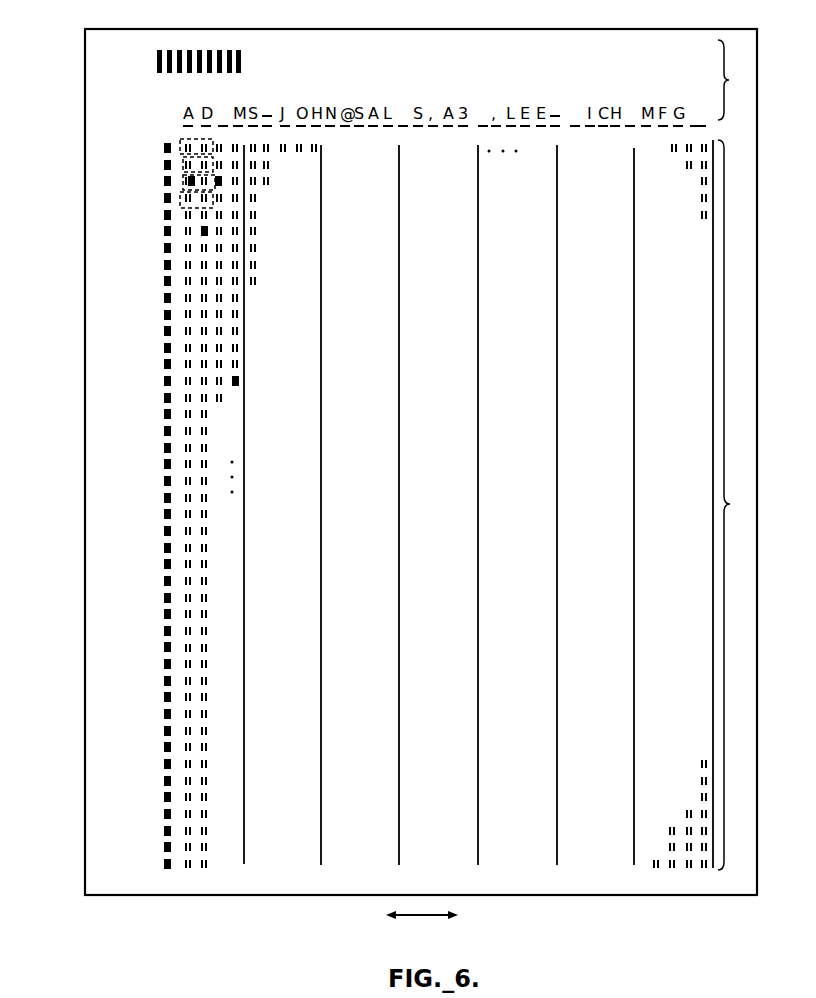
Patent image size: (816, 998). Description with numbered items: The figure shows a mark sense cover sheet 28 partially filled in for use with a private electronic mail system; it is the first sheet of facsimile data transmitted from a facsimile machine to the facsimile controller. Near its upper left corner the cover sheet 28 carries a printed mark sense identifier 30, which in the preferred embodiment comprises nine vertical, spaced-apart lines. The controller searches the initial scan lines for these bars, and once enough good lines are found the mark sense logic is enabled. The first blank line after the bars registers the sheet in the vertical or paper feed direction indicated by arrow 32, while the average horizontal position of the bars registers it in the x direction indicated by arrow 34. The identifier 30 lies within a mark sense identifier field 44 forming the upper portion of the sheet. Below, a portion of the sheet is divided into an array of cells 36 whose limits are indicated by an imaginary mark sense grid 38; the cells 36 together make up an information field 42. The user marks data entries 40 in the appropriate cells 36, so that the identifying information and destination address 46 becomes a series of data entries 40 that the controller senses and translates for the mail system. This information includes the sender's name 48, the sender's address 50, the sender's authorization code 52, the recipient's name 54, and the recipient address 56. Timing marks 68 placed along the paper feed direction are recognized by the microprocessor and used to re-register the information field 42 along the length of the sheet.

The mark sense cover sheet 28 is at (609, 30).
The mark sense identifier 30 is at (226, 50).
The arrow indicating vertical or y direction 32 is at (72, 384).
The arrow indicating horizontal or x direction 34 is at (415, 915).
The cells 36 is at (179, 139).
The mark sense grid 38 is at (209, 140).
The data entries 40 is at (183, 186).
The information field 42 is at (498, 505).
The mark sense identifier field 44 is at (736, 80).
The identifying information and destination address 46 is at (646, 80).
The sender's name 48 is at (272, 111).
The sender's address 50 is at (398, 108).
The sender's authorization code 52 is at (481, 106).
The recipient's name 54 is at (573, 106).
The recipient address 56 is at (667, 108).
The timing marks 68 is at (167, 812).